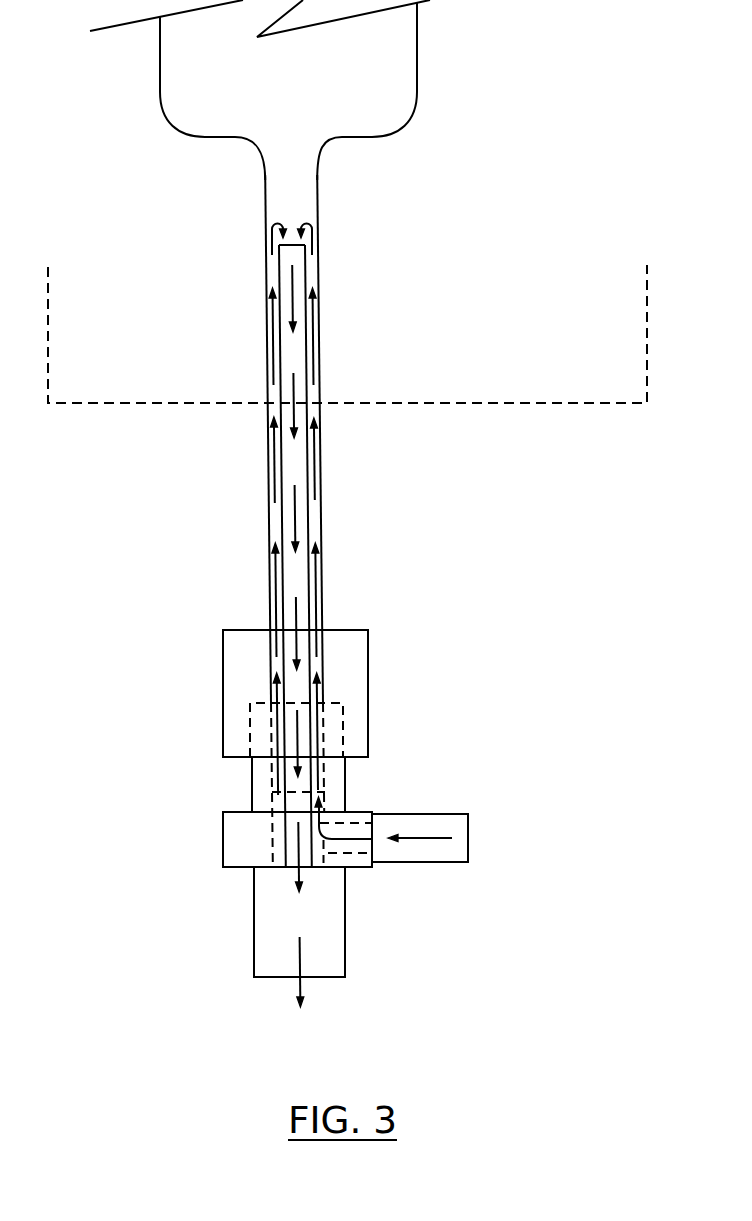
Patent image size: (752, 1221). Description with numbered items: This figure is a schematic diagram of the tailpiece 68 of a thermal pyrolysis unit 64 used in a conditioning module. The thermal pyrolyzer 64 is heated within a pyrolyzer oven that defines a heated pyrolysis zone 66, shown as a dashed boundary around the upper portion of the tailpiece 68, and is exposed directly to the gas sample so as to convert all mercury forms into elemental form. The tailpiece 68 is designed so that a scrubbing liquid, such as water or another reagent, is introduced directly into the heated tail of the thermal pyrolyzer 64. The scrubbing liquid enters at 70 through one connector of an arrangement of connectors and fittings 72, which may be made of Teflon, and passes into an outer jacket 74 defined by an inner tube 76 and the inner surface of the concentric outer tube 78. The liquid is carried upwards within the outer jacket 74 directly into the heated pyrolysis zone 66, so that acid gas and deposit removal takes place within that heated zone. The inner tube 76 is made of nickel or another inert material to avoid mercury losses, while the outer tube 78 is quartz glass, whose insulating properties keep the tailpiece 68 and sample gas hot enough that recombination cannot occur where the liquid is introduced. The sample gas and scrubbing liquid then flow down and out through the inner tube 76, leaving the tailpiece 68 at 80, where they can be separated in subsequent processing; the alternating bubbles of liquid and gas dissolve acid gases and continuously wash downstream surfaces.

The thermal pyrolysis unit 64 is at (422, 59).
The heated pyrolysis zone 66 is at (582, 371).
The tailpiece 68 is at (325, 248).
The scrubbing liquid entry 70 is at (500, 837).
The arrangement of connectors and fittings 72 is at (347, 793).
The outer jacket 74 is at (273, 530).
The inner tube 76 is at (290, 582).
The outer tube 78 is at (323, 518).
The tailpiece outlet 80 is at (298, 984).